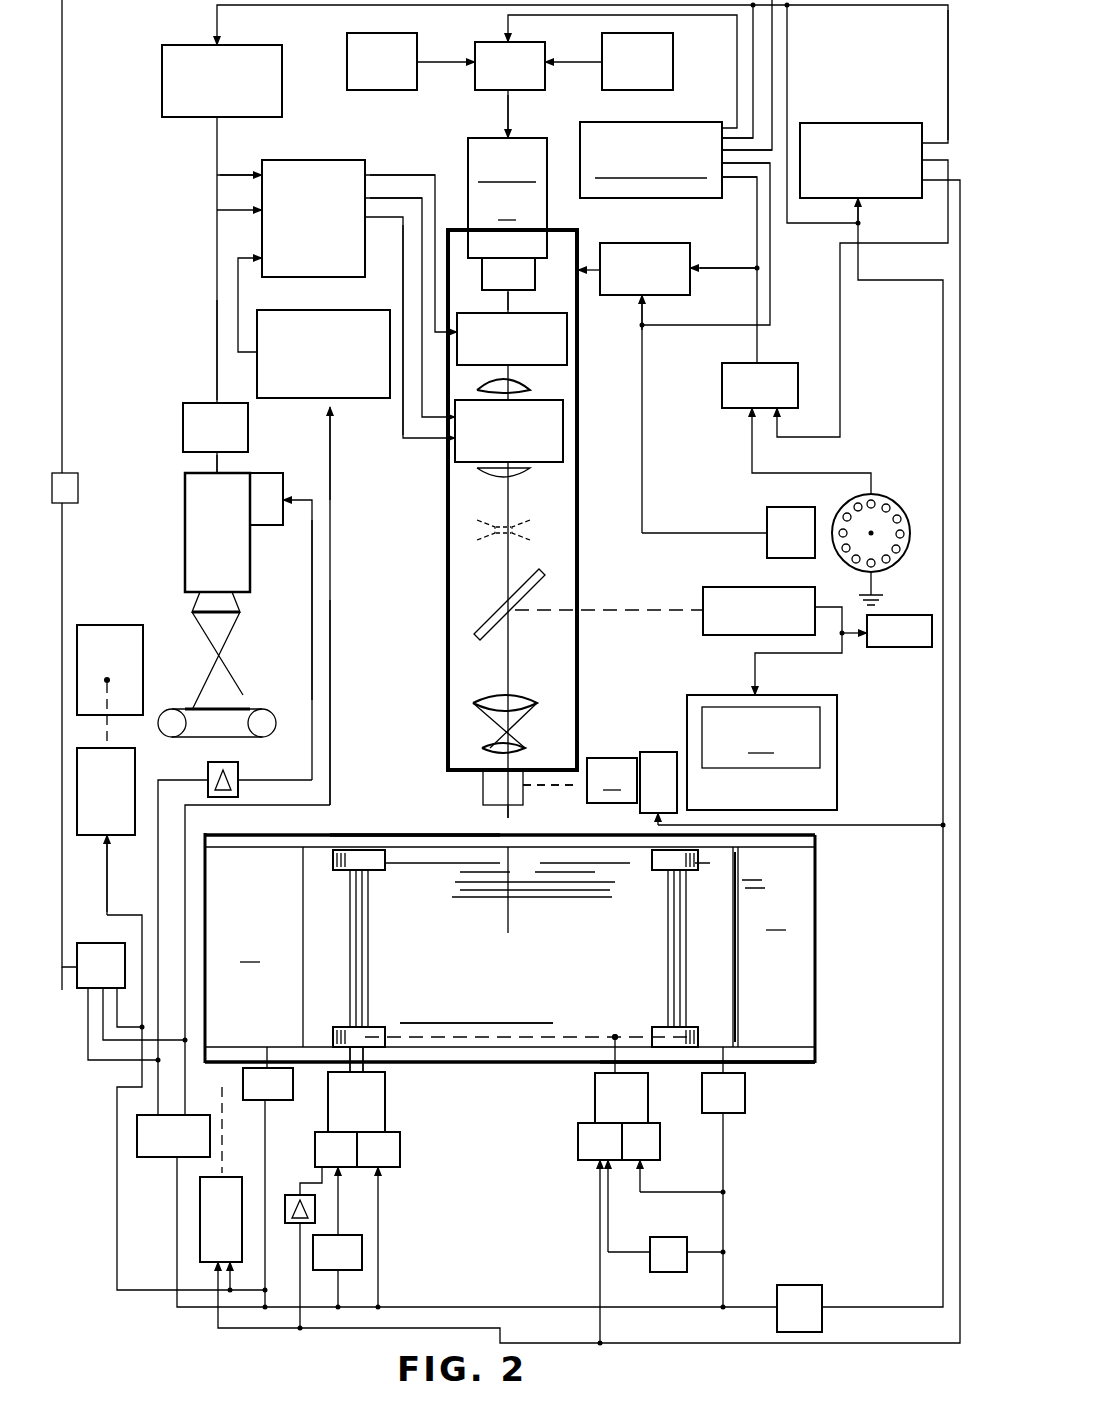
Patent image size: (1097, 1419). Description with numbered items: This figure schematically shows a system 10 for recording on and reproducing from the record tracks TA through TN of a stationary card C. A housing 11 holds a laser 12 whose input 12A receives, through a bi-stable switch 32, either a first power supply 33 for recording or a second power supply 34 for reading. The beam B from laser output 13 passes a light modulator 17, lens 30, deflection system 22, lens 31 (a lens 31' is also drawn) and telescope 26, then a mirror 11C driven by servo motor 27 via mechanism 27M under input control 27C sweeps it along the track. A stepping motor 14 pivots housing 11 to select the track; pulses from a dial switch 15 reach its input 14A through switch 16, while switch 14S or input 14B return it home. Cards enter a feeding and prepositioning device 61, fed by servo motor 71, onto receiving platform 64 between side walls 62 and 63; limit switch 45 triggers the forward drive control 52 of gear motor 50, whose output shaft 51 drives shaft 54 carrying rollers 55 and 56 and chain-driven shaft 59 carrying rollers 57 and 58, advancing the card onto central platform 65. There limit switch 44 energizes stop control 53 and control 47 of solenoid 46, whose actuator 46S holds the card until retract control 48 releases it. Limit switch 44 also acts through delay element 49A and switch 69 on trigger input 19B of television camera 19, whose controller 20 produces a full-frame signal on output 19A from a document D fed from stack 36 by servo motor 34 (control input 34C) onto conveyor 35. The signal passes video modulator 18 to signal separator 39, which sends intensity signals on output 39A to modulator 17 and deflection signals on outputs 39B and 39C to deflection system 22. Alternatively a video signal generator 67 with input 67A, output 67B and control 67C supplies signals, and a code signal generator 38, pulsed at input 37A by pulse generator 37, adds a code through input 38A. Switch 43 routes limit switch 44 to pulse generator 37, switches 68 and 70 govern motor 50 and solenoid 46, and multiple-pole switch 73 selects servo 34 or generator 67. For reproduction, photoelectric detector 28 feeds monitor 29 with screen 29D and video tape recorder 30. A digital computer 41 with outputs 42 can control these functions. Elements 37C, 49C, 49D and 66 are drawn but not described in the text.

The system 10 is at (145, 1297).
The housing 11 is at (447, 530).
The mirror 11C is at (483, 790).
The laser 12 is at (507, 198).
The laser input 12A is at (509, 113).
The laser output 13 is at (508, 274).
The stepping motor 14 is at (648, 243).
The actuating input of stepping motor 14A is at (694, 268).
The return-to-home input 14B is at (645, 330).
The second switch 14S is at (768, 512).
The dial switch 15 is at (898, 562).
The switch 16 is at (722, 400).
The light modulator 17 is at (567, 338).
The video modulator 18 is at (248, 425).
The television camera 19 is at (185, 528).
The camera output 19A is at (217, 465).
The trigger input 19B is at (300, 500).
The controller 20 is at (275, 482).
The deflection system 22 is at (563, 430).
The telescope 26 is at (525, 720).
The servo motor 27 is at (612, 780).
The input control of servo 27C is at (658, 752).
The mechanism 27M is at (550, 801).
The photoelectric detector 28 is at (740, 587).
The monitor 29 is at (480, 625).
The display screen 29D is at (761, 754).
The lens 30 is at (530, 383).
The lens 31 is at (517, 483).
The alternate lens 31' is at (519, 531).
The bi-stable switch 32 is at (530, 44).
The first power supply 33 is at (347, 50).
The second power supply 34 is at (660, 50).
The control input to servo 34C is at (107, 840).
The conveyor 35 is at (252, 710).
The stack 36 is at (118, 638).
The pulse signal generator 37 is at (855, 122).
The energizing input of code generator 37A is at (912, 5).
The control input line 37C is at (862, 208).
The code signal generator 38 is at (282, 82).
The code generator output 38A is at (215, 175).
The video signal separator 39 is at (285, 163).
The separator output 39A is at (375, 172).
The separator output 39B is at (390, 197).
The separator output 39C is at (400, 250).
The digital computer 41 is at (685, 128).
The computer outputs 42 is at (760, 132).
The switch 43 is at (782, 1285).
The limit switch 44 is at (745, 1112).
The limit switch 45 is at (288, 1100).
The solenoid 46 is at (595, 1103).
The actuator 46S is at (615, 1035).
The solenoid control 47 is at (578, 1160).
The retract control 48 is at (660, 1152).
The delay element 49A is at (238, 775).
The amplifier 49C is at (285, 1200).
The amplifier 49D is at (78, 505).
The constant speed gear motor 50 is at (385, 1106).
The output shaft 51 is at (385, 1075).
The forward drive control 52 is at (315, 1157).
The stop control 53 is at (400, 1157).
The first shaft 54 is at (369, 950).
The drive roller 55 is at (385, 870).
The drive roller 56 is at (385, 1027).
The roller 57 is at (655, 866).
The roller 58 is at (655, 1027).
The shaft 59 is at (668, 925).
The card feeding and prepositioning device 61 is at (415, 833).
The side wall 62 is at (385, 833).
The side wall 63 is at (790, 1063).
The receiving platform 64 is at (271, 947).
The central platform 65 is at (480, 1048).
The compartment 66 is at (759, 947).
The video signal generator 67 is at (347, 398).
The input of video signal generator 67A is at (333, 702).
The output of video signal generator 67B is at (217, 352).
The control for video signal generator 67C is at (332, 445).
The manual switch 68 is at (362, 1258).
The manual switch 69 is at (160, 1157).
The manual switch 70 is at (680, 1272).
The servo motor 71 is at (200, 1240).
The multiple-pole manual switch 73 is at (103, 943).
The beam B is at (508, 300).
The card C is at (735, 965).
The document D is at (200, 707).
The record track TN is at (712, 863).
The record track TA is at (710, 1022).